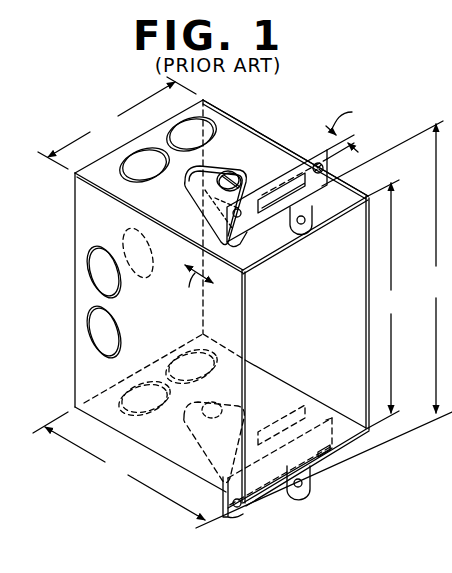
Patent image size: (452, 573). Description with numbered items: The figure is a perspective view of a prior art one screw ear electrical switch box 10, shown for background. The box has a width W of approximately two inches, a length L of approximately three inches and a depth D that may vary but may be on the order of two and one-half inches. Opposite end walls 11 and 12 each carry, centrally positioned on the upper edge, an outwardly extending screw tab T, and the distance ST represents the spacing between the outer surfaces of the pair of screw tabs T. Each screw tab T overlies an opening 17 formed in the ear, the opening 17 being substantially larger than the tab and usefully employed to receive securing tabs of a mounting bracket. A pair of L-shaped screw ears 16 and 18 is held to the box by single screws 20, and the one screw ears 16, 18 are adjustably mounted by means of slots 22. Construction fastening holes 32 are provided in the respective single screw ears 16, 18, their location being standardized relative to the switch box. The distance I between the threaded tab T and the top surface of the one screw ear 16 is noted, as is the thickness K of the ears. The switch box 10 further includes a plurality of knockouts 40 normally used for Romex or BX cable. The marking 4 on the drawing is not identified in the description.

The electrical switch box 10 is at (300, 114).
The end wall 11 is at (233, 125).
The end wall 12 is at (340, 426).
The L-shaped screw ear 16 is at (328, 168).
The opening 17 is at (281, 197).
The L-shaped screw ear 18 is at (237, 514).
The screw 20 is at (242, 198).
The slot 22 is at (208, 183).
The construction fastening hole 32 is at (318, 164).
The knockout 40 is at (90, 287).
The reference numeral 4 is at (445, 352).
The width W is at (117, 123).
The depth D is at (119, 466).
The length L is at (383, 304).
The distance between screw tabs ST is at (324, 324).
The thickness of the ears K is at (346, 125).
The distance I is at (197, 282).
The screw tab T is at (290, 215).